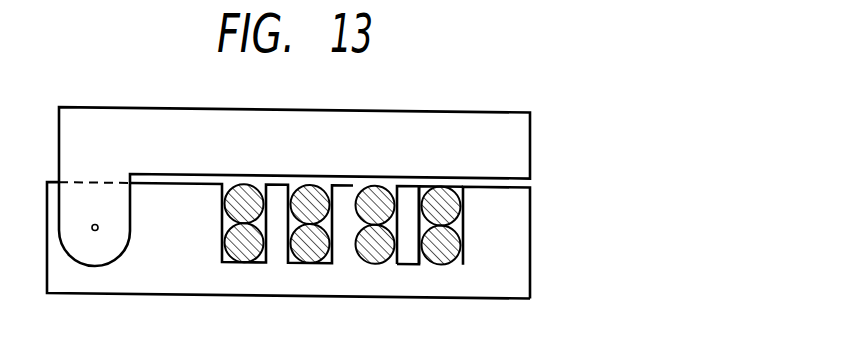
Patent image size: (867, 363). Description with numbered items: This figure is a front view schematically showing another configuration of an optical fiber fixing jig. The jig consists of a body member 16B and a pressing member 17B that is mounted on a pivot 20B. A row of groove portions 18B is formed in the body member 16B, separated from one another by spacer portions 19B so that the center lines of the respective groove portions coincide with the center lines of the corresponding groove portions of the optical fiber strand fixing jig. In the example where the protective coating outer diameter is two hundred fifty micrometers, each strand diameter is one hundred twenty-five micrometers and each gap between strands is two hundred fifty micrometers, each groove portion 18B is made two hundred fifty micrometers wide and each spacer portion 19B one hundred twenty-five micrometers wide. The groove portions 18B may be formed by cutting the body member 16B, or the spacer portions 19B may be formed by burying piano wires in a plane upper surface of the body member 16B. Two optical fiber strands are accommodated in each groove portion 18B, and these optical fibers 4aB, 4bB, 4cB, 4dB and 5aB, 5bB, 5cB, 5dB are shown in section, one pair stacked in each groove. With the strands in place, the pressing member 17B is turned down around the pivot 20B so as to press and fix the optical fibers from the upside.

The pressing member 17B is at (123, 119).
The body member 16B is at (155, 275).
The pivot 20B is at (94, 231).
The optical fiber 4aB is at (259, 185).
The optical fiber 4bB is at (317, 187).
The optical fiber 4cB is at (373, 188).
The optical fiber 4dB is at (439, 192).
The optical fiber 5aB is at (238, 250).
The optical fiber 5bB is at (310, 255).
The optical fiber 5cB is at (373, 260).
The optical fiber 5dB is at (440, 264).
The spacer portions 19B is at (406, 247).
The groove portions 18B is at (477, 228).